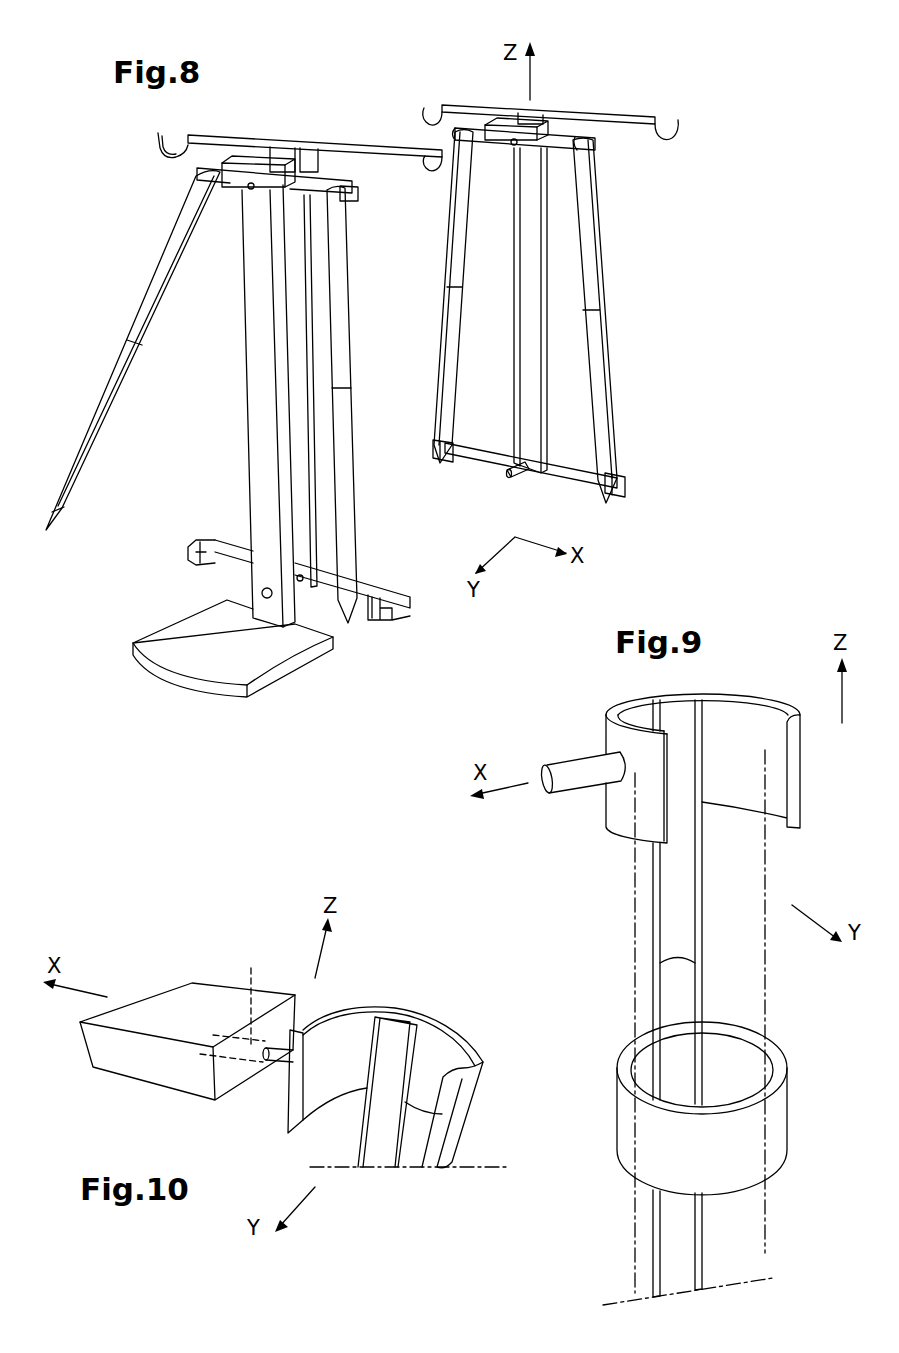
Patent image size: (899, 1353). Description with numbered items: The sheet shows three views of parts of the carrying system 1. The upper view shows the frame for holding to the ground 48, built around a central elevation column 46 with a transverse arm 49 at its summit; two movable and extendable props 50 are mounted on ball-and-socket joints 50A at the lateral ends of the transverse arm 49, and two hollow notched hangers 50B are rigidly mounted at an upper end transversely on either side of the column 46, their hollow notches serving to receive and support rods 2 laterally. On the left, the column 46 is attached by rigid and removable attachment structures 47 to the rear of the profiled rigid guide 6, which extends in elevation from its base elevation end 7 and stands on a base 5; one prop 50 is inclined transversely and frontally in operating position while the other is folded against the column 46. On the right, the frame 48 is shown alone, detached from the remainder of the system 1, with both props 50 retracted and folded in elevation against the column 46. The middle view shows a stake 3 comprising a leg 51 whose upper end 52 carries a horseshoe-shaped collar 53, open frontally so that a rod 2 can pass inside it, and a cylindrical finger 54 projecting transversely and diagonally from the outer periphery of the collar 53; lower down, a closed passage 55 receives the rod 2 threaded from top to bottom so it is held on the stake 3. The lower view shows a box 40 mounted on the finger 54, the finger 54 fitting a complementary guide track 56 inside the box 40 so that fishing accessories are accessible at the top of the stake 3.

In FIG. 8, the carrying system 1 is at (362, 401).
In FIG. 9, the carrying system 1 is at (701, 998).
In FIG. 10, the carrying system 1 is at (410, 1131).
In FIG. 9, the rod 2 is at (701, 1002).
In FIG. 9, the stake 3 is at (701, 998).
In FIG. 10, the stake 3 is at (410, 1131).
In FIG. 8, the base plate 5 is at (168, 650).
In FIG. 8, the profiled rigid guide 6 is at (238, 406).
In FIG. 8, the base elevation end 7 is at (256, 483).
In FIG. 10, the box 40 is at (187, 1019).
In FIG. 8, the central elevation column 46 is at (305, 520).
In FIG. 8, the attachment structures 47 is at (250, 189).
In FIG. 8, the frame for holding to the ground 48 is at (362, 401).
In FIG. 8, the transverse arm 49 is at (308, 188).
In FIG. 8, the props 50 is at (148, 307).
In FIG. 8, the ball-and-socket joints 50A is at (197, 203).
In FIG. 8, the hollow notched hangers 50B is at (358, 137).
In FIG. 9, the leg 51 is at (670, 1268).
In FIG. 10, the leg 51 is at (378, 1153).
In FIG. 9, the upper end 52 is at (651, 734).
In FIG. 10, the upper end 52 is at (396, 1053).
In FIG. 9, the collar 53 is at (733, 749).
In FIG. 10, the collar 53 is at (438, 1048).
In FIG. 9, the cylindrical finger 54 is at (579, 778).
In FIG. 10, the cylindrical finger 54 is at (280, 1062).
In FIG. 9, the closed passage 55 is at (778, 1123).
In FIG. 10, the complementary guide track 56 is at (252, 968).